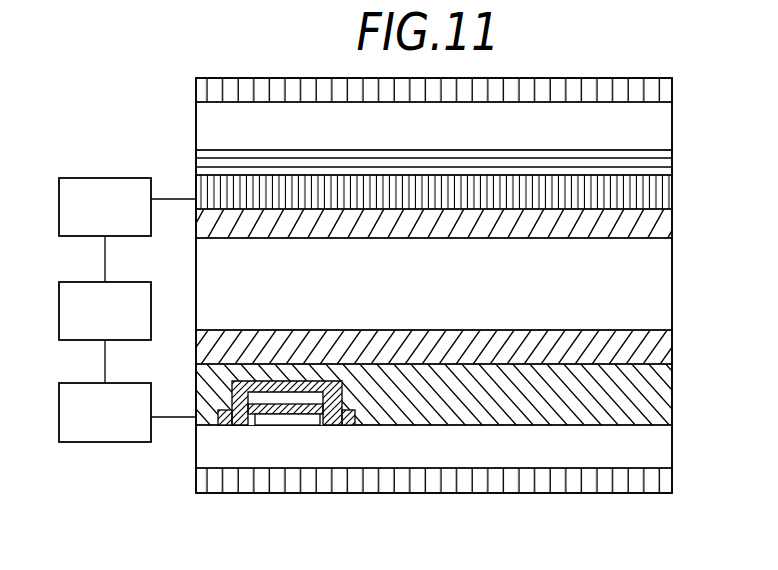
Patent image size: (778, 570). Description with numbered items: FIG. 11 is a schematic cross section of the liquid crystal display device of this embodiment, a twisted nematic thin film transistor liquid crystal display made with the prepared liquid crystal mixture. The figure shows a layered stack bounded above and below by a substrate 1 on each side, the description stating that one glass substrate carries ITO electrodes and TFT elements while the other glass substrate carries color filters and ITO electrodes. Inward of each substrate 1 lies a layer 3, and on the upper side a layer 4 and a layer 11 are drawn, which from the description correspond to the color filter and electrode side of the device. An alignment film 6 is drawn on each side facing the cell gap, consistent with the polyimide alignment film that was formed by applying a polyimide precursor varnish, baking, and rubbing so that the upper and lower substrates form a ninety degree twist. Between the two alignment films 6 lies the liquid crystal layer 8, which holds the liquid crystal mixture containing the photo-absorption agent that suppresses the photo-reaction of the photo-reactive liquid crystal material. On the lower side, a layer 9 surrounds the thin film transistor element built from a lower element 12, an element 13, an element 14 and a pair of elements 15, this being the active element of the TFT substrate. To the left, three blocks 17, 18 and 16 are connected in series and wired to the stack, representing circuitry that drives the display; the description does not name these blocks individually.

The substrate 1 is at (643, 93).
The insulating layer 3 is at (657, 138).
The electrode layer 4 is at (657, 172).
The alignment layer 6 is at (657, 228).
The liquid crystal layer 8 is at (657, 273).
The interlayer insulating film 9 is at (657, 404).
The color filter layer 11 is at (657, 199).
The gate electrode 12 is at (283, 427).
The semiconductor layer 13 is at (247, 427).
The gate insulating film 14 is at (317, 427).
The source/drain electrode 15 is at (211, 427).
The gate driver circuit 16 is at (72, 394).
The source driver circuit 17 is at (70, 186).
The controller 18 is at (70, 290).